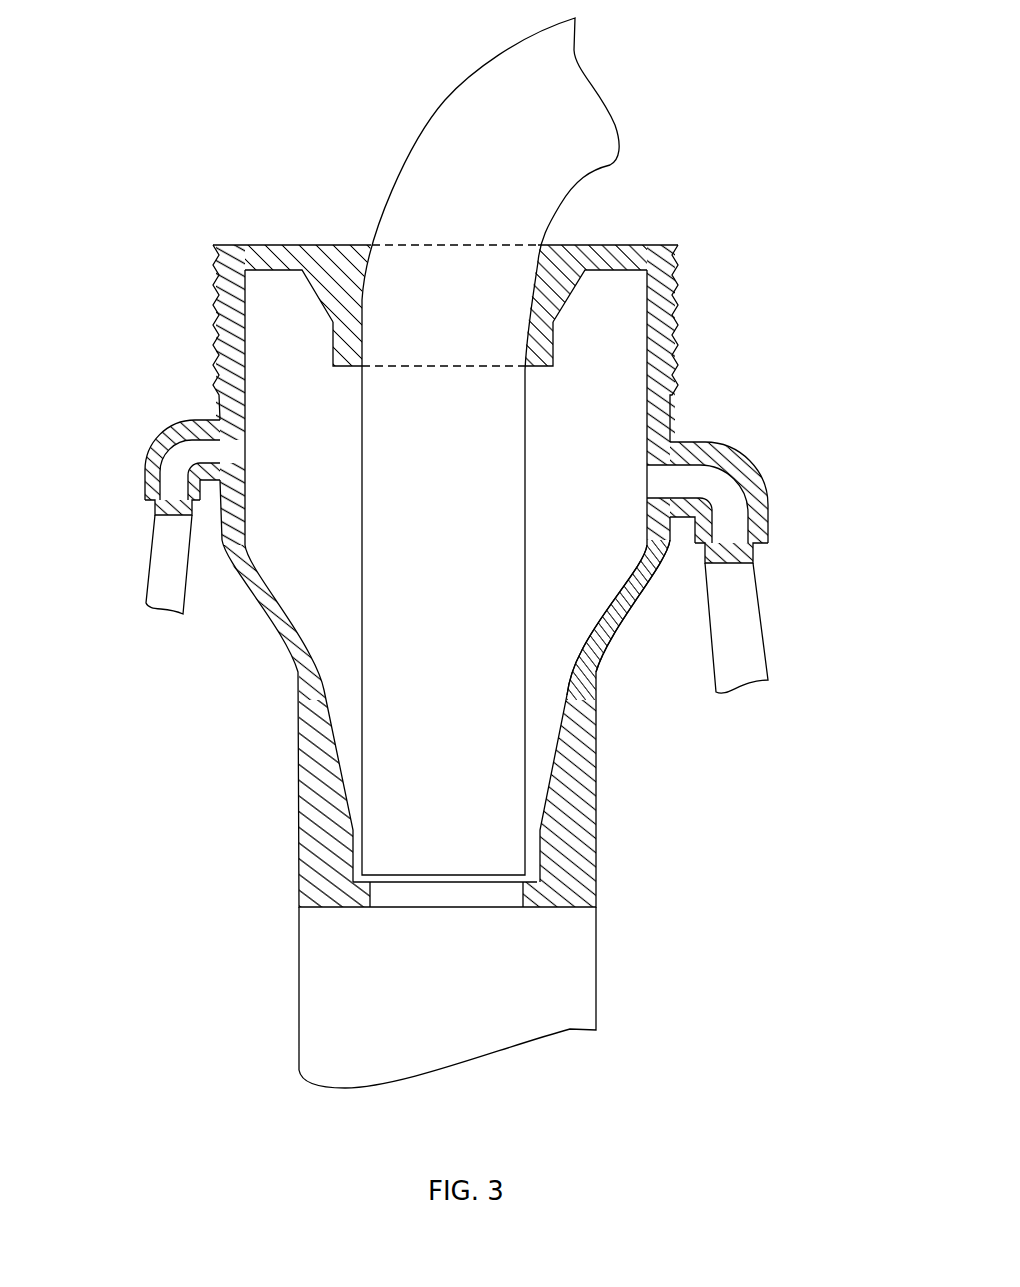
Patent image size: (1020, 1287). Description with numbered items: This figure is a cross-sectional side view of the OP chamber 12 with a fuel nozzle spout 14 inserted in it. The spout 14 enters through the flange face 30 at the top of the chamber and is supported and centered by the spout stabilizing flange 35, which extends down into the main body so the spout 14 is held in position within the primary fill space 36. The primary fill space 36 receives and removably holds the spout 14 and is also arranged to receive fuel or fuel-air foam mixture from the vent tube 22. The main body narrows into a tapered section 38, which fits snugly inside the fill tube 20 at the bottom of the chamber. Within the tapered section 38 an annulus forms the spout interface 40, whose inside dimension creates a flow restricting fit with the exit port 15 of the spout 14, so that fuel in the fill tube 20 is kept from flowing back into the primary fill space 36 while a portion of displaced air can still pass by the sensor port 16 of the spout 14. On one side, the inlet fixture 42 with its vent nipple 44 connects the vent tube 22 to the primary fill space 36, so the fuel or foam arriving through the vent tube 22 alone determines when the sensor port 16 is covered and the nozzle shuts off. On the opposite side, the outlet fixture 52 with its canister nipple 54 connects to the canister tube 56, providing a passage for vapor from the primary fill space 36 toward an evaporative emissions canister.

The OP chamber 12 is at (158, 228).
The flange face 30 is at (263, 245).
The spout stabilizing flange 35 is at (555, 357).
The primary fill space 36 is at (337, 480).
The spout 14 is at (527, 478).
The sensor port 16 is at (516, 820).
The tapered section 38 is at (620, 633).
The spout interface 40 is at (350, 882).
The exit port 15 is at (418, 882).
The fill tube 20 is at (299, 995).
The outlet fixture 52 is at (160, 440).
The canister nipple 54 is at (157, 510).
The canister tube 56 is at (151, 563).
The inlet fixture 42 is at (743, 460).
The vent nipple 44 is at (757, 552).
The vent tube 22 is at (763, 634).